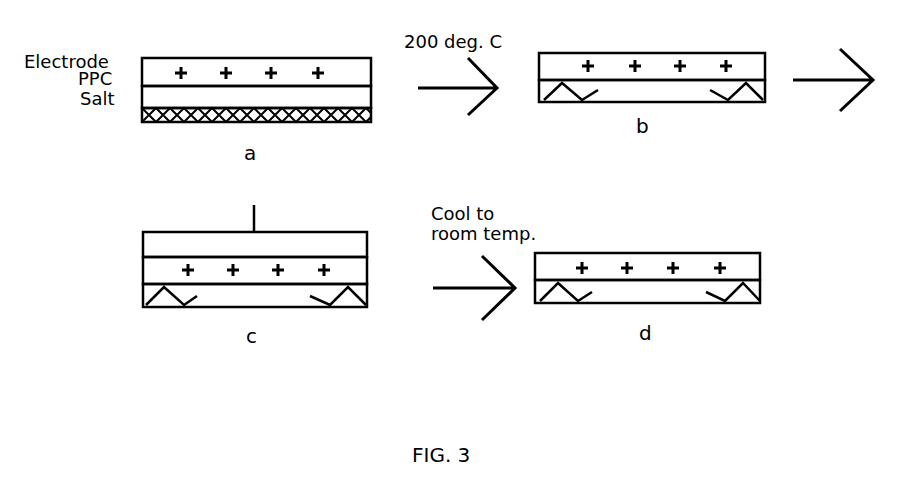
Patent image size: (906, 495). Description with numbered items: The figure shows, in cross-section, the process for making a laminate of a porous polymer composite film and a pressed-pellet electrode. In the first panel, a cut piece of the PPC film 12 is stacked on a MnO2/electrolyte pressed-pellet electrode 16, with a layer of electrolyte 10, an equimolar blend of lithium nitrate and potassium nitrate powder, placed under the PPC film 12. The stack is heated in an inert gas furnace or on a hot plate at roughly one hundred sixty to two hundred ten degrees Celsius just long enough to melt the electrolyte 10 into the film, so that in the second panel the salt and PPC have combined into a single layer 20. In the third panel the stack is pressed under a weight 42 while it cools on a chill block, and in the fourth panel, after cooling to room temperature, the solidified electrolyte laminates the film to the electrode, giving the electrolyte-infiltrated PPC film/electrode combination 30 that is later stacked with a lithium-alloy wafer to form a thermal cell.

The pressed-pellet electrode 16 is at (373, 69).
The PPC film 12 is at (372, 96).
The electrolyte 10 is at (371, 110).
The salt + PPC layer 20 is at (768, 87).
The weight 42 is at (370, 248).
The electrolyte-infiltrated PPC film/electrode combination 30 is at (761, 275).